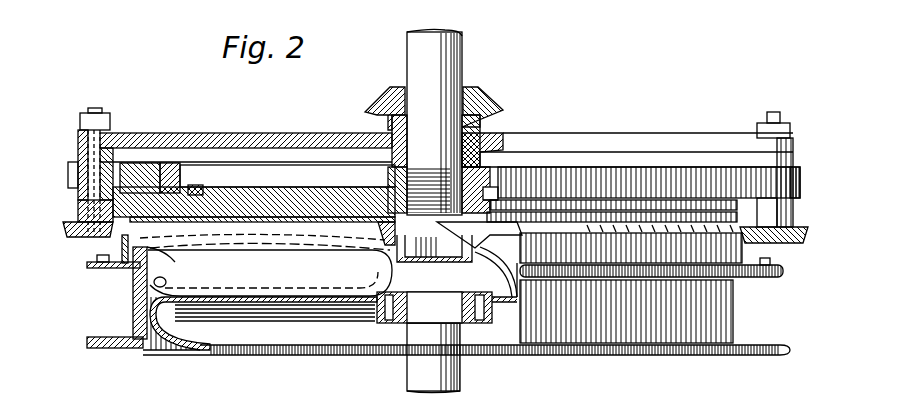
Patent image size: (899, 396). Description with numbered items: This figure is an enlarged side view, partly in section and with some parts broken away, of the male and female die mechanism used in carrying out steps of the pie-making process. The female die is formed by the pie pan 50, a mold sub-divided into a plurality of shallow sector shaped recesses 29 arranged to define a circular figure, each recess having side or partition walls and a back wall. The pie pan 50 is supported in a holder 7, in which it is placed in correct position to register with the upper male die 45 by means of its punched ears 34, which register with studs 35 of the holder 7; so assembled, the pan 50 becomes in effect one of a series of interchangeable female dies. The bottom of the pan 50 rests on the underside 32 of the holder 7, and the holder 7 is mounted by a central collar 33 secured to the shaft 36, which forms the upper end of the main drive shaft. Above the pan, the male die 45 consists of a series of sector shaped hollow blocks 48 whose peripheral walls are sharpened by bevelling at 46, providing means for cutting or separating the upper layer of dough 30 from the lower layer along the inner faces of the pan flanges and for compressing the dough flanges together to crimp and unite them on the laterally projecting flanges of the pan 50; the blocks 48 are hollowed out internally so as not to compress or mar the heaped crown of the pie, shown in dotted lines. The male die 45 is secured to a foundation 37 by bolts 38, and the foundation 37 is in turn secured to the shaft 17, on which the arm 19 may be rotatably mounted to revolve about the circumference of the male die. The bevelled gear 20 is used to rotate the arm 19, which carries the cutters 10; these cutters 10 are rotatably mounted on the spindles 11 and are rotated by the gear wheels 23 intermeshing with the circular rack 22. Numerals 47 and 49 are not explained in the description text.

The holder 7 is at (135, 299).
The cutters 10 is at (67, 230).
The spindles 11 is at (93, 112).
The shaft 17 is at (415, 58).
The arm 19 is at (222, 133).
The bevelled gear 20 is at (377, 100).
The circular rack 22 is at (577, 170).
The gear wheels 23 is at (68, 163).
The sector shaped recesses 29 is at (266, 265).
The upper layer of dough 30 is at (261, 393).
The underside of holder 32 is at (377, 300).
The central collar 33 is at (403, 324).
The punched ears 34 is at (777, 262).
The studs 35 is at (98, 254).
The shaft 36 is at (453, 373).
The foundation 37 is at (250, 188).
The bolts 38 is at (197, 188).
The upper male die 45 is at (307, 215).
The bevelled cutting edge 46 is at (483, 188).
The opening 47 is at (377, 245).
The sector shaped hollow blocks 48 is at (333, 235).
The block 49 is at (168, 163).
The pie pan 50 is at (140, 303).